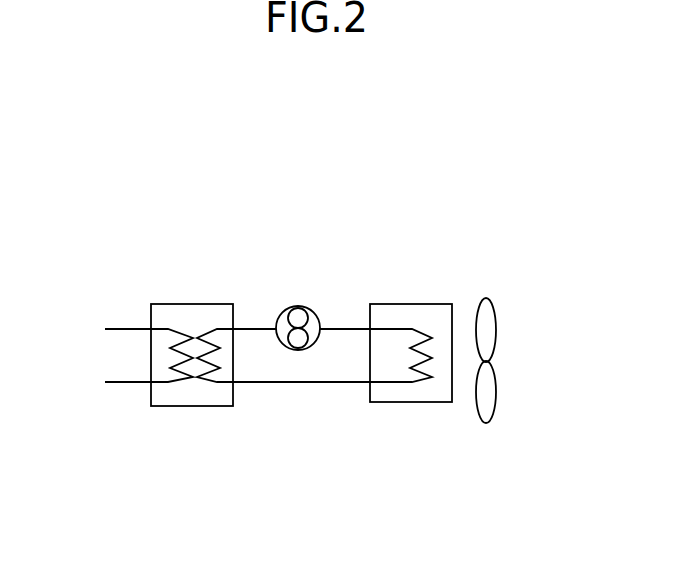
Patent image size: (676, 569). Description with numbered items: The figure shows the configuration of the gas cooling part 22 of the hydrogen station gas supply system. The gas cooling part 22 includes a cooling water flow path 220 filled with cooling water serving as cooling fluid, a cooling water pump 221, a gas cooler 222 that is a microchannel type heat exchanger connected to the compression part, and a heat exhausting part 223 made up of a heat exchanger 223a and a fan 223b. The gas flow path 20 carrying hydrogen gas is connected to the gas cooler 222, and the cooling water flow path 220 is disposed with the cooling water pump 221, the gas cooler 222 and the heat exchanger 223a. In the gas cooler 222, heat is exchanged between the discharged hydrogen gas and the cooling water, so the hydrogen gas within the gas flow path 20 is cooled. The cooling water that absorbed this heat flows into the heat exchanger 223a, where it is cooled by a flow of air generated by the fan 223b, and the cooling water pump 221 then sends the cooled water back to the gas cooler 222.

The gas cooling part 22 is at (127, 183).
The gas flow path 20 is at (132, 382).
The gas cooler 222 is at (192, 304).
The cooling water pump 221 is at (298, 306).
The cooling water flow path 220 is at (293, 382).
The heat exhausting part 223 is at (485, 208).
The heat exchanger 223a is at (399, 304).
The fan 223b is at (519, 316).